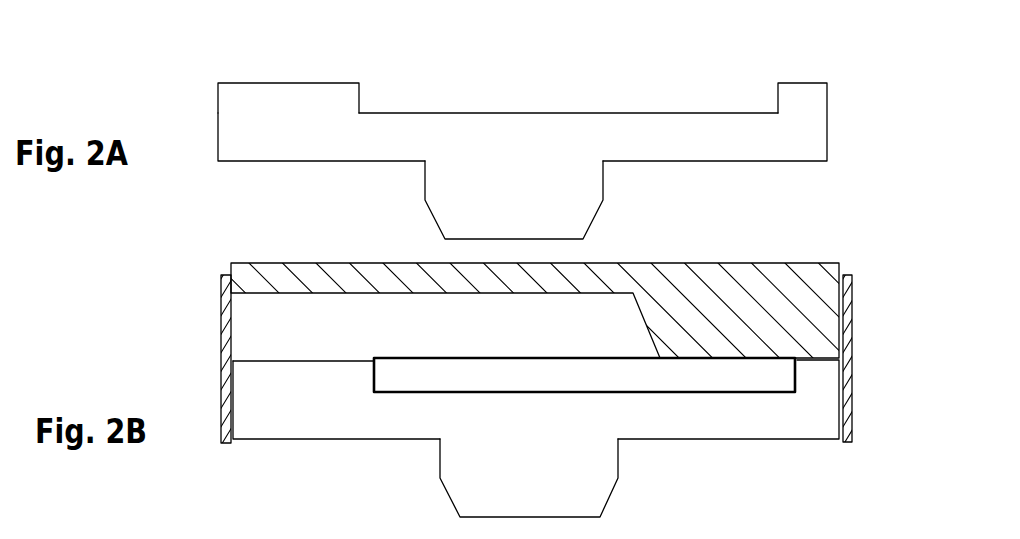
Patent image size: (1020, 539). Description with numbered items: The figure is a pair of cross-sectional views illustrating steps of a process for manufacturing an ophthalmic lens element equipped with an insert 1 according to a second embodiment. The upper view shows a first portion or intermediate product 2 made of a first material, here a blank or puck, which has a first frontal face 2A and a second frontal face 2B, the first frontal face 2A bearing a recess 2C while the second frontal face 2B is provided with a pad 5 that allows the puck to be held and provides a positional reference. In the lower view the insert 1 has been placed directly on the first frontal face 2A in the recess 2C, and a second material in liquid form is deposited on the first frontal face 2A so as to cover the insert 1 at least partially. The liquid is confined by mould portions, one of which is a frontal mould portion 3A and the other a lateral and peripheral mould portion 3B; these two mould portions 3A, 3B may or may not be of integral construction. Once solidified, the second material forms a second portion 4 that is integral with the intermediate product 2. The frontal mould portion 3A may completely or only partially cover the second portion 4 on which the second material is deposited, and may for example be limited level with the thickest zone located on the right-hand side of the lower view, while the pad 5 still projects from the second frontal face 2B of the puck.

In FIG. 2B, the insert 1 is at (656, 382).
In FIG. 2A, the intermediate product 2 is at (570, 141).
In FIG. 2B, the intermediate product 2 is at (536, 422).
In FIG. 2A, the first frontal face 2A is at (328, 83).
In FIG. 2A, the second frontal face 2B is at (288, 162).
In FIG. 2A, the recess 2C is at (579, 112).
In FIG. 2B, the frontal mould portion 3A is at (712, 277).
In FIG. 2B, the lateral and peripheral mould portion 3B is at (847, 322).
In FIG. 2B, the second portion 4 is at (300, 331).
In FIG. 2A, the pad 5 is at (463, 179).
In FIG. 2B, the pad 5 is at (478, 457).